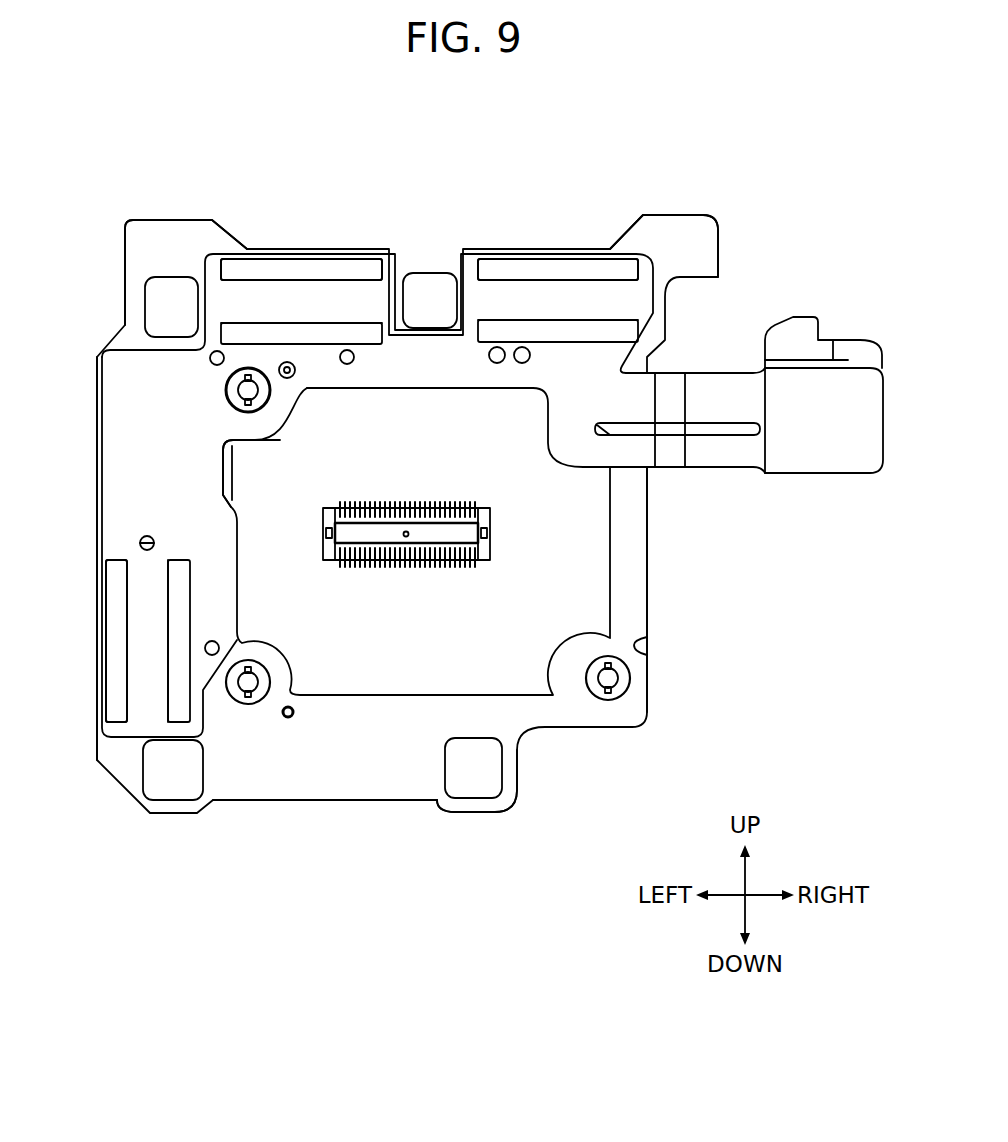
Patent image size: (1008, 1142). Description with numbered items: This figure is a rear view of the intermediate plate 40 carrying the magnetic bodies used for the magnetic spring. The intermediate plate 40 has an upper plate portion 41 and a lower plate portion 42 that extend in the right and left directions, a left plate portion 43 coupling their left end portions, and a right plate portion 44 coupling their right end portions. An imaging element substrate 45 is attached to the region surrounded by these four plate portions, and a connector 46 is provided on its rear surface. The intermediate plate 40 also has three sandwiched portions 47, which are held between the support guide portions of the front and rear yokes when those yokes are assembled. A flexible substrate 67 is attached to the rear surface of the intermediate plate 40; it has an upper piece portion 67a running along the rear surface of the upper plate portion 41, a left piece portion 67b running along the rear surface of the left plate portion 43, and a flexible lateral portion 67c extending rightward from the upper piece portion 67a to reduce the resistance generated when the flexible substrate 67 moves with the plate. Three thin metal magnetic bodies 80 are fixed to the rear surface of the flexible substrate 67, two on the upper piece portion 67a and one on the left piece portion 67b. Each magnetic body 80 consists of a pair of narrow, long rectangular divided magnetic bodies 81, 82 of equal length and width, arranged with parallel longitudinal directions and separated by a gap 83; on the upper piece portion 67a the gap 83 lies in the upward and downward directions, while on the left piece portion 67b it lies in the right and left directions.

The intermediate plate 40 is at (634, 726).
The upper plate portion 41 is at (433, 265).
The lower plate portion 42 is at (317, 782).
The left plate portion 43 is at (95, 483).
The right plate portion 44 is at (628, 588).
The imaging element substrate 45 is at (573, 535).
The connector 46 is at (447, 562).
The sandwiched portion 47 is at (173, 240).
The flexible substrate 67 is at (716, 368).
The upper piece portion 67a is at (433, 372).
The left piece portion 67b is at (178, 485).
The lateral portion 67c is at (817, 457).
The magnetic body 80 is at (276, 256).
The divided magnetic body 81 is at (340, 270).
The divided magnetic body 82 is at (313, 333).
The gap 83 is at (297, 281).